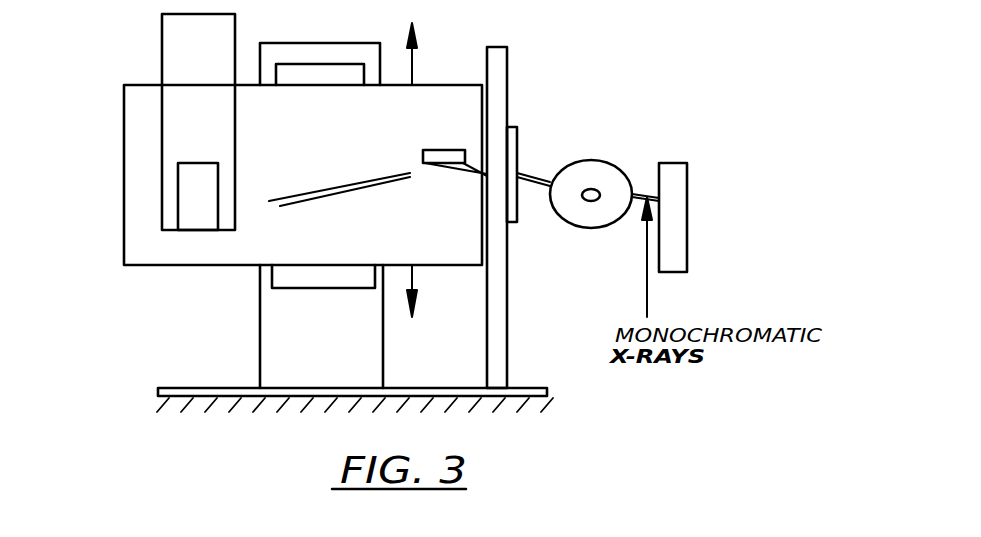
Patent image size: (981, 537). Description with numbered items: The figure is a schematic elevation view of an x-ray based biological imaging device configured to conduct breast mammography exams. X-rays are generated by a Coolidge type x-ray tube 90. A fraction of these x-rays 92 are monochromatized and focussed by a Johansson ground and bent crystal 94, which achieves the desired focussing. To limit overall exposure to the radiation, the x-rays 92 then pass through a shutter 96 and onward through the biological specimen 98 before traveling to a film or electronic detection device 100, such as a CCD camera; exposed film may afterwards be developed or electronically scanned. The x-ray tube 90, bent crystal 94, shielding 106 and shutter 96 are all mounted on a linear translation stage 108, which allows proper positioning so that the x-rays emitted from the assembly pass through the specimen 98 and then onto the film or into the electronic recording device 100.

The x-ray tube 90 is at (313, 242).
The x-rays 92 is at (340, 193).
The bent crystal 94 is at (423, 154).
The shutter 96 is at (513, 222).
The biological specimen 98 is at (589, 161).
The film or electronic detection device 100 is at (687, 250).
The shielding 106 is at (532, 58).
The linear translation stage 108 is at (270, 283).